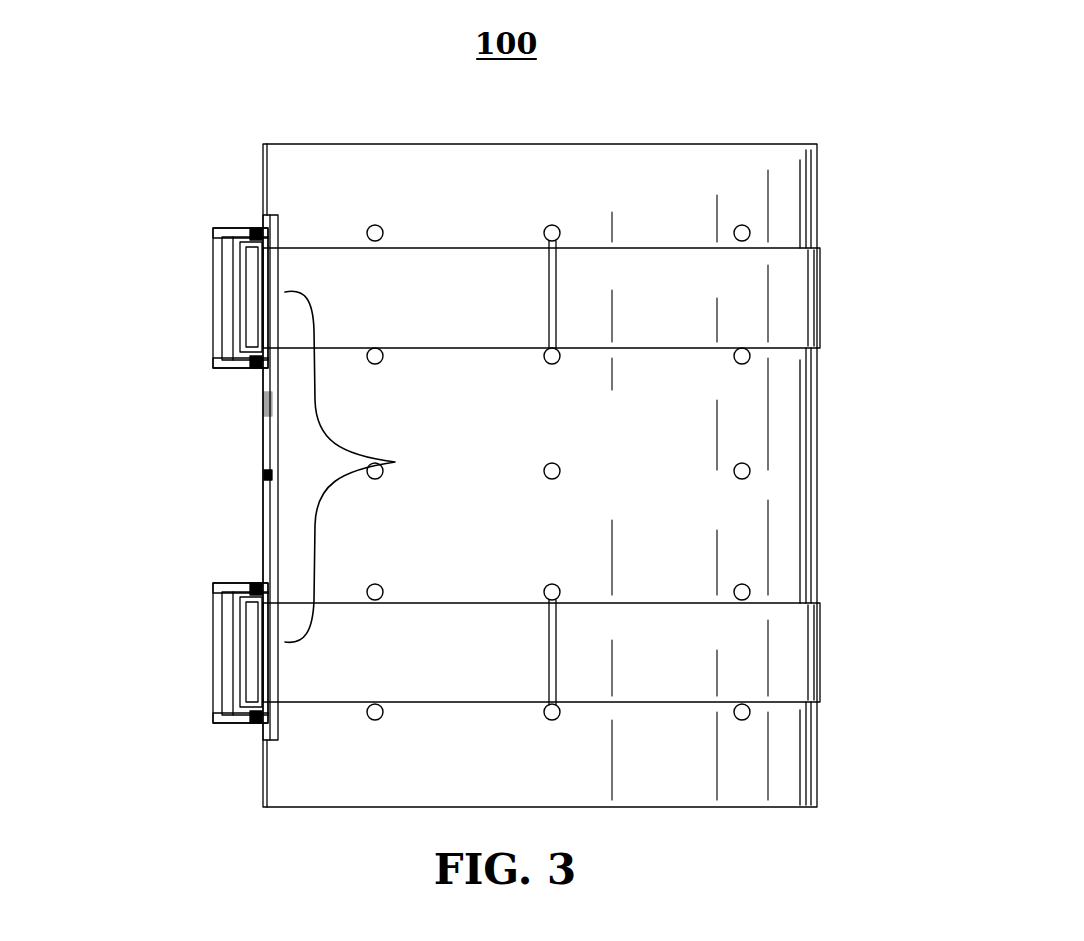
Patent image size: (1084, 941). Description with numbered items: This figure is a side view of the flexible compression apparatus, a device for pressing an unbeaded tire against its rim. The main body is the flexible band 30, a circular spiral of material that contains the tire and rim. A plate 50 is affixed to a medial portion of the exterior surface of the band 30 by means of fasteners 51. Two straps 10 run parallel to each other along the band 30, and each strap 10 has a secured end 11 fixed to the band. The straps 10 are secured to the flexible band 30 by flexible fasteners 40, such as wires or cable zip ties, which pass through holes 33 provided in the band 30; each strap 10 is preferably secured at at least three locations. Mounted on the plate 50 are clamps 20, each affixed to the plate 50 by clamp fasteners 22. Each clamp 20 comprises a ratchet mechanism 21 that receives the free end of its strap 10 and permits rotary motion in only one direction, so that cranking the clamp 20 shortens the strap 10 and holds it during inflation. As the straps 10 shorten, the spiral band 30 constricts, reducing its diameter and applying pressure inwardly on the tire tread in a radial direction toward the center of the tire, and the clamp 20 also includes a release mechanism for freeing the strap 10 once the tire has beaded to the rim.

The strap 10 is at (820, 292).
The secured end 11 is at (360, 466).
The clamp 20 is at (215, 314).
The ratchet mechanism 21 is at (215, 243).
The clamp fasteners 22 is at (257, 230).
The flexible band 30 is at (818, 398).
The holes 33 is at (748, 478).
The flexible fasteners 40 is at (557, 272).
The plate 50 is at (258, 386).
The fasteners 51 is at (262, 476).